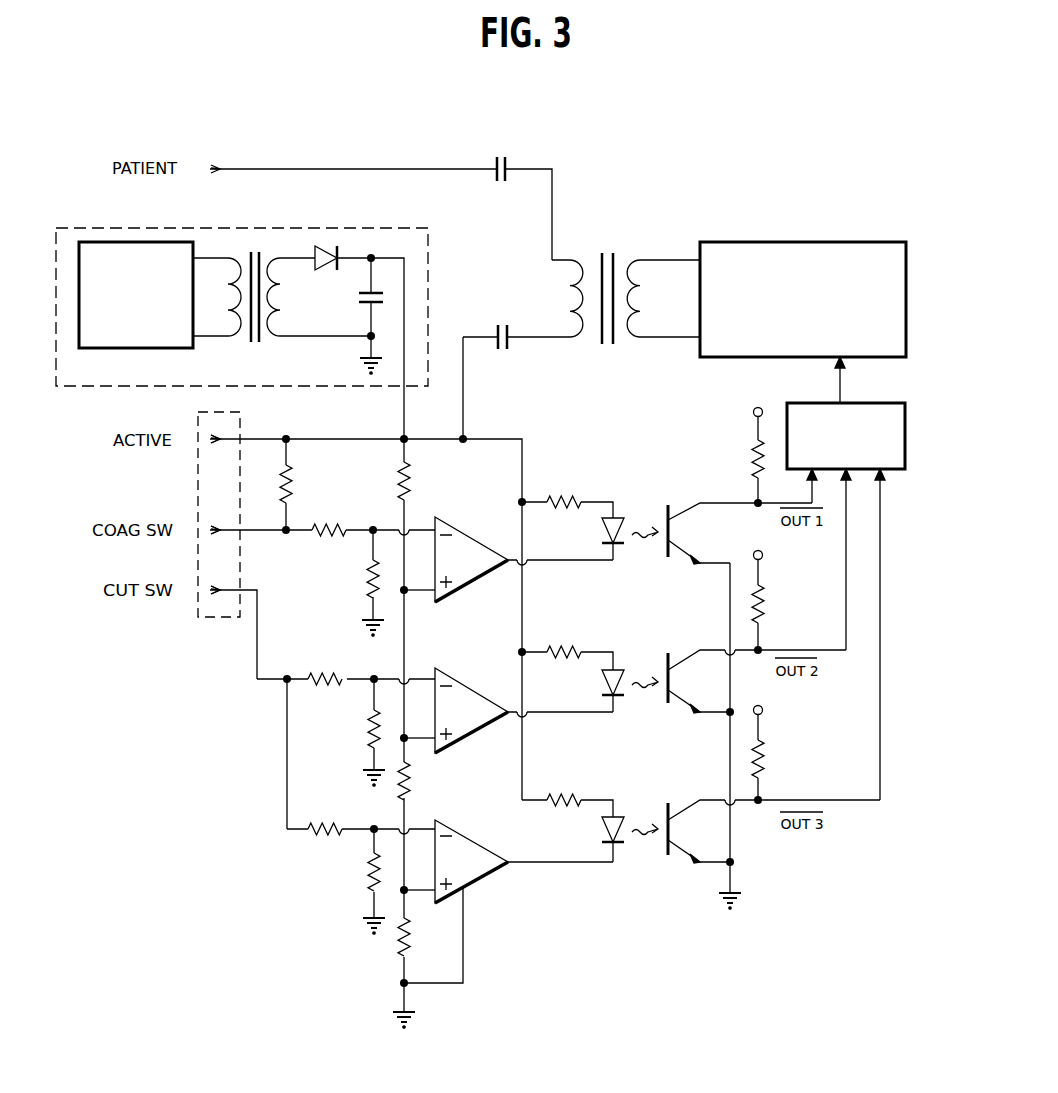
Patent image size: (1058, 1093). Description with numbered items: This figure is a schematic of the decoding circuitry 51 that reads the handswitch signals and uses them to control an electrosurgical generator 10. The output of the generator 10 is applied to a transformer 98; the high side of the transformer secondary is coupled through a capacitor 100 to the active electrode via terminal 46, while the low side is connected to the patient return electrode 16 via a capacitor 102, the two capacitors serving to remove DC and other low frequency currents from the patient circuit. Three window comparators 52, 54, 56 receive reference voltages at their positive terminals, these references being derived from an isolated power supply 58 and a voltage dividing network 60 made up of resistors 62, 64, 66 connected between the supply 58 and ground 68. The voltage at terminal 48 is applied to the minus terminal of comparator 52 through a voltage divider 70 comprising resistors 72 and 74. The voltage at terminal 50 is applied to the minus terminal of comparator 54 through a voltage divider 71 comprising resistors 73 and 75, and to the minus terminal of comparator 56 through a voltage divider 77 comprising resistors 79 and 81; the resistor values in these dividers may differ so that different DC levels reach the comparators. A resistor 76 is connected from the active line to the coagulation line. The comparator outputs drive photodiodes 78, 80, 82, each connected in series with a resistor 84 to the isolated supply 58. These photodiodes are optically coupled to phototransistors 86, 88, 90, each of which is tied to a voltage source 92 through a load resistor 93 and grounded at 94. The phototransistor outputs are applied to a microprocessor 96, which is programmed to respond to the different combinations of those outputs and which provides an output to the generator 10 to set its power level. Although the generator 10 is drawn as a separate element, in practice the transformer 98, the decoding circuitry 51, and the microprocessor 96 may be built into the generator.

The electrosurgical generator 10 is at (785, 258).
The return electrode 16 is at (222, 165).
The terminal 46 is at (220, 437).
The terminal 48 is at (220, 527).
The terminal 50 is at (220, 587).
The decoding circuitry 51 is at (343, 427).
The window comparator 52 is at (478, 552).
The window comparator 54 is at (468, 693).
The window comparator 56 is at (467, 847).
The isolated power supply 58 is at (313, 228).
The voltage dividing network 60 is at (379, 483).
The resistor 62 is at (410, 482).
The resistor 64 is at (413, 785).
The resistor 66 is at (410, 942).
The ground 68 is at (410, 1012).
The voltage divider 70 is at (291, 622).
The voltage divider 71 is at (304, 769).
The resistor 72 is at (322, 538).
The resistor 73 is at (337, 670).
The resistor 74 is at (367, 580).
The resistor 75 is at (368, 727).
The resistor 76 is at (293, 488).
The voltage divider 77 is at (296, 882).
The photodiode 78 is at (600, 537).
The resistor 79 is at (342, 822).
The photodiode 80 is at (602, 680).
The resistor 81 is at (358, 867).
The photodiode 82 is at (600, 827).
The resistor 84 is at (563, 495).
The phototransistor 86 is at (680, 502).
The phototransistor 88 is at (680, 650).
The phototransistor 90 is at (680, 805).
The voltage source 92 is at (753, 410).
The load resistor 93 is at (750, 452).
The ground 94 is at (733, 888).
The microprocessor 96 is at (888, 415).
The transformer 98 is at (608, 248).
The capacitor 100 is at (507, 327).
The capacitor 102 is at (493, 162).